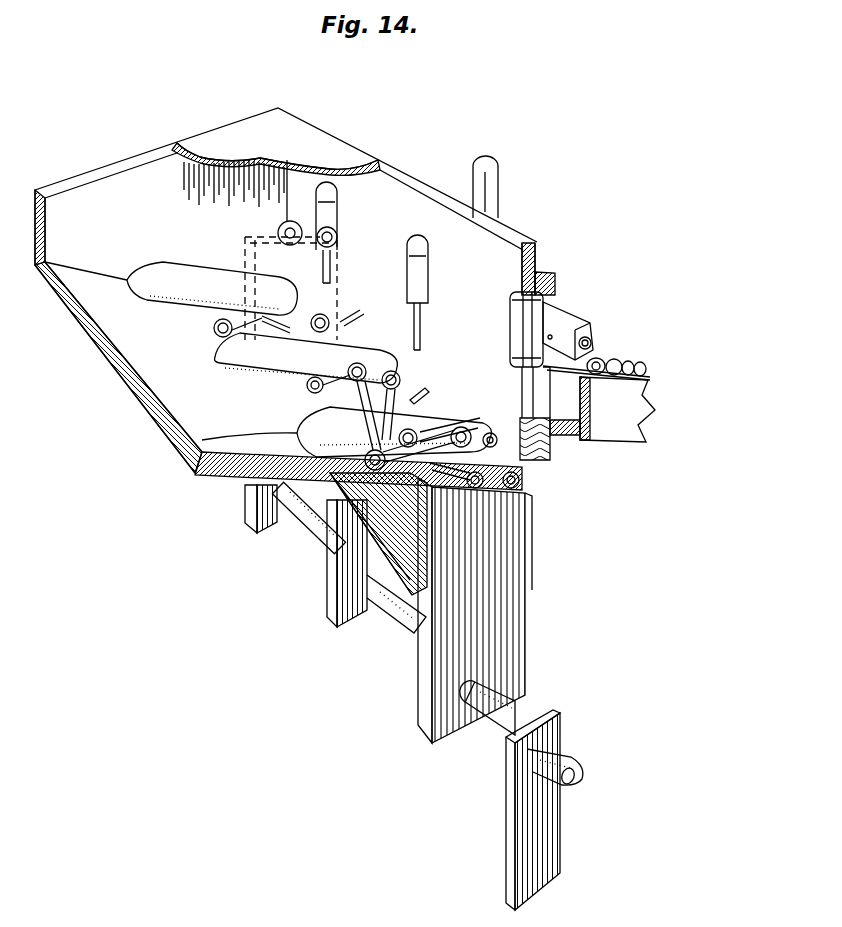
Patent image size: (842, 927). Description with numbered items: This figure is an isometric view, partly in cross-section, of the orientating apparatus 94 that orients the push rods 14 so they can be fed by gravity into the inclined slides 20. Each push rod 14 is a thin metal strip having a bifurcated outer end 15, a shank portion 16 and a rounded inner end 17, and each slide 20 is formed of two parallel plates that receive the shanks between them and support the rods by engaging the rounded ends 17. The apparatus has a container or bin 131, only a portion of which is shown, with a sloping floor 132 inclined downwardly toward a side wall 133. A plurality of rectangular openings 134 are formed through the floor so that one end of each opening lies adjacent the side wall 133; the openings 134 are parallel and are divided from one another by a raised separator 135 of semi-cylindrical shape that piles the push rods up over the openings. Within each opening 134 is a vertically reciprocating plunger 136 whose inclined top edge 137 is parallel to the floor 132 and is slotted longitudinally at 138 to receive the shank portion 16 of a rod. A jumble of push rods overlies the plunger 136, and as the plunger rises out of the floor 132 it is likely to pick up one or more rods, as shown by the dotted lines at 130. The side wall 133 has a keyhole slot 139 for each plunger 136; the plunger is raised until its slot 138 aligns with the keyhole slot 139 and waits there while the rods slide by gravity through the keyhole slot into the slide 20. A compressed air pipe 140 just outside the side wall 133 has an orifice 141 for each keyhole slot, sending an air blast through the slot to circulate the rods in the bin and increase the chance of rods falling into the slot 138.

The orientating apparatus 94 is at (166, 177).
The container or bin 131 is at (82, 207).
The dotted-line push rods picked up by plunger 130 is at (298, 222).
The side wall 133 is at (408, 205).
The keyhole slot 139 is at (553, 277).
The orifice 141 is at (570, 318).
The compressed air pipe 140 is at (590, 323).
The rounded inner end 17 is at (623, 352).
The push rod 14 is at (645, 367).
The slide 20 is at (623, 420).
The sloping floor 132 is at (138, 335).
The raised separator 135 is at (195, 445).
The shank portion 16 is at (373, 422).
The bifurcated outer end 15 is at (410, 400).
The inclined top edge 137 is at (500, 493).
The longitudinal slot 138 is at (427, 520).
The vertically reciprocating plunger 136 is at (515, 613).
The rectangular opening 134 is at (330, 565).